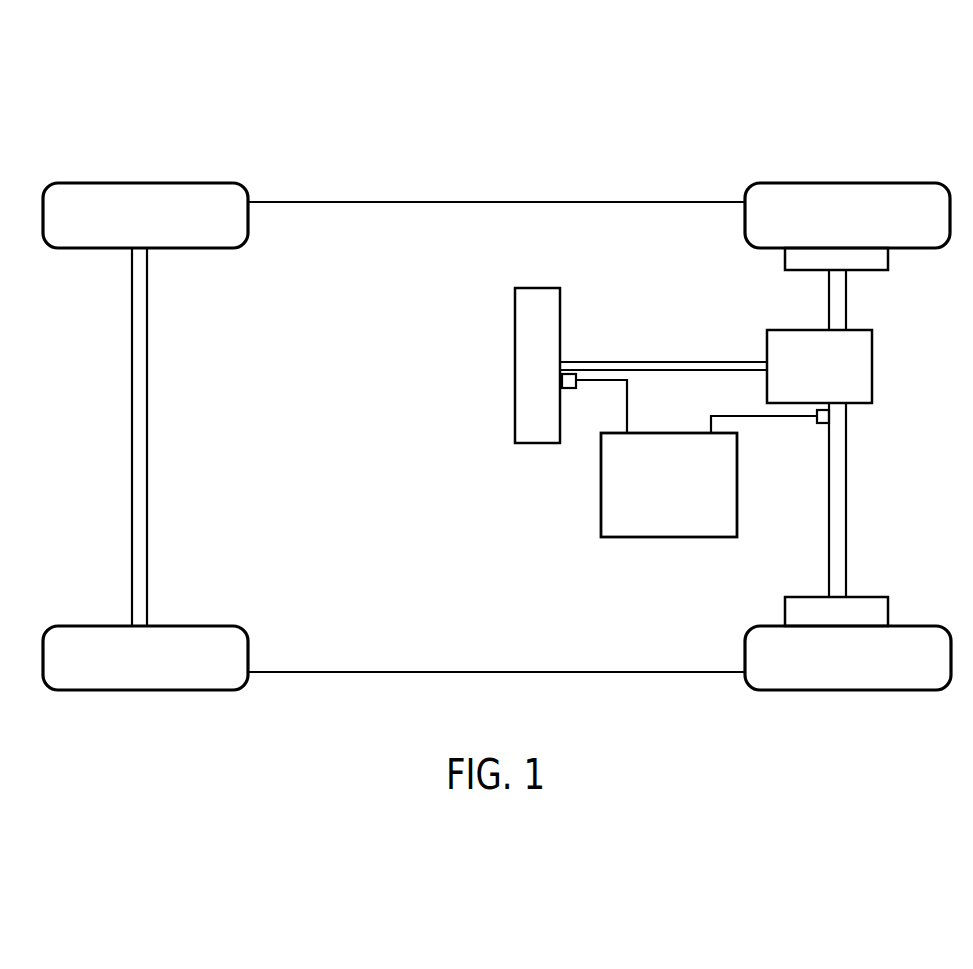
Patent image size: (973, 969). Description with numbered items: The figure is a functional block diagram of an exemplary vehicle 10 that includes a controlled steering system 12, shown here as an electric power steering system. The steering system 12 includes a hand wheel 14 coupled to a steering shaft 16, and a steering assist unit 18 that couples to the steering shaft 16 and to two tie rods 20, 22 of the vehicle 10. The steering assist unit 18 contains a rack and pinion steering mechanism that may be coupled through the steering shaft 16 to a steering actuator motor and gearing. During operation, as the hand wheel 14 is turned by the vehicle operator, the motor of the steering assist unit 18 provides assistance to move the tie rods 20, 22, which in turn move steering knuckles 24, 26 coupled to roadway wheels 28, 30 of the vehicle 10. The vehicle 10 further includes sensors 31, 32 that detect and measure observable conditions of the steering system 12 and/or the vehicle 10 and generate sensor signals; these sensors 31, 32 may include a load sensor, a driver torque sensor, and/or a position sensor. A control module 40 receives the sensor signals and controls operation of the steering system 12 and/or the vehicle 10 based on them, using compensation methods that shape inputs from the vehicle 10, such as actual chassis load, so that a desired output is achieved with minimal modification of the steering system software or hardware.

The vehicle 10 is at (706, 103).
The steering system 12 is at (630, 278).
The hand wheel 14 is at (534, 286).
The steering shaft 16 is at (638, 360).
The steering assist unit 18 is at (864, 368).
The tie rod 20 is at (849, 303).
The tie rod 22 is at (838, 478).
The steering knuckle 24 is at (797, 261).
The steering knuckle 26 is at (805, 606).
The roadway wheel 28 is at (878, 193).
The roadway wheel 30 is at (904, 637).
The sensor 31 is at (568, 391).
The sensor 32 is at (823, 426).
The control module 40 is at (600, 488).